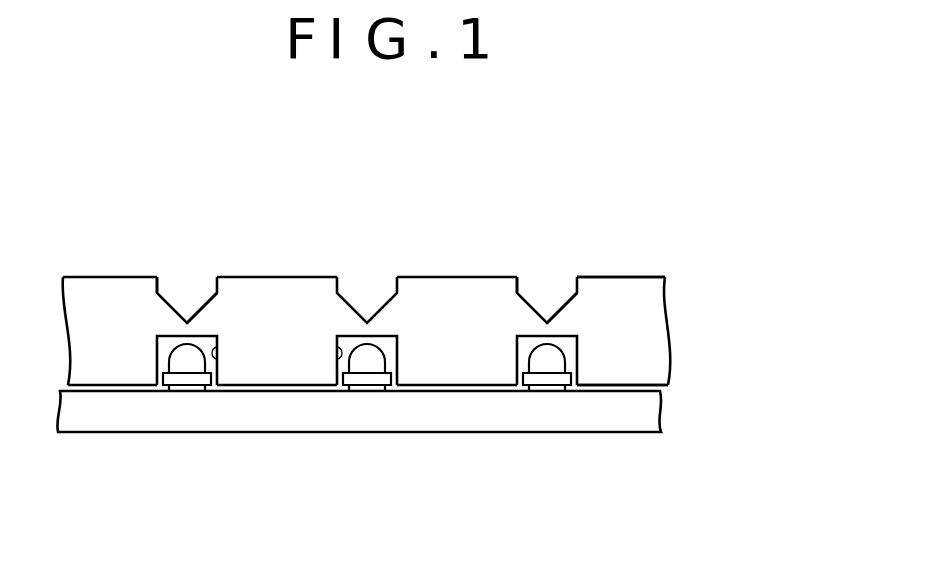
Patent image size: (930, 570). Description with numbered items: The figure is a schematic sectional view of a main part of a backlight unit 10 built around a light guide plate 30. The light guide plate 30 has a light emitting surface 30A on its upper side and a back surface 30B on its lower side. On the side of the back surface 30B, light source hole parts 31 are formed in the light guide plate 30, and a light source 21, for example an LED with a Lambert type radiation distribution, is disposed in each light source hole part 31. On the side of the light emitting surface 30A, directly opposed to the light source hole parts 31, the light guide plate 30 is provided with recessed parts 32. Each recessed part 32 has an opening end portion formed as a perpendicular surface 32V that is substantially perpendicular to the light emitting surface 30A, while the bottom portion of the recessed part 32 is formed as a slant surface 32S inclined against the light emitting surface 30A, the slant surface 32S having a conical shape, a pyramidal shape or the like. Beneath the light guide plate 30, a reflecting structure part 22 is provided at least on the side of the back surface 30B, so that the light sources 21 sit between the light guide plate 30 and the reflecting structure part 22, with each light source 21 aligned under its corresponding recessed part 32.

The backlight unit 10 is at (414, 140).
The light source 21 is at (187, 363).
The reflecting structure part 22 is at (480, 413).
The light guide plate 30 is at (642, 325).
The light emitting surface 30A is at (624, 275).
The back surface 30B is at (622, 387).
The light source hole part 31 is at (338, 353).
The recessed part 32 is at (185, 305).
The perpendicular surface 32V is at (165, 284).
The slant surface 32S is at (203, 307).